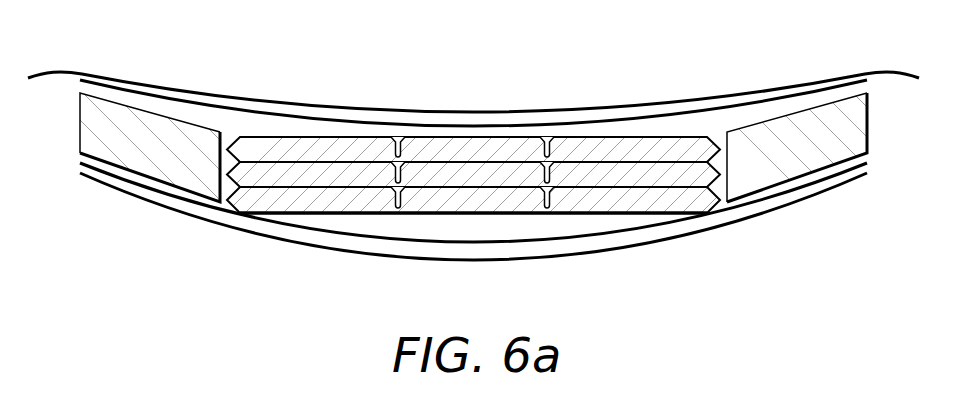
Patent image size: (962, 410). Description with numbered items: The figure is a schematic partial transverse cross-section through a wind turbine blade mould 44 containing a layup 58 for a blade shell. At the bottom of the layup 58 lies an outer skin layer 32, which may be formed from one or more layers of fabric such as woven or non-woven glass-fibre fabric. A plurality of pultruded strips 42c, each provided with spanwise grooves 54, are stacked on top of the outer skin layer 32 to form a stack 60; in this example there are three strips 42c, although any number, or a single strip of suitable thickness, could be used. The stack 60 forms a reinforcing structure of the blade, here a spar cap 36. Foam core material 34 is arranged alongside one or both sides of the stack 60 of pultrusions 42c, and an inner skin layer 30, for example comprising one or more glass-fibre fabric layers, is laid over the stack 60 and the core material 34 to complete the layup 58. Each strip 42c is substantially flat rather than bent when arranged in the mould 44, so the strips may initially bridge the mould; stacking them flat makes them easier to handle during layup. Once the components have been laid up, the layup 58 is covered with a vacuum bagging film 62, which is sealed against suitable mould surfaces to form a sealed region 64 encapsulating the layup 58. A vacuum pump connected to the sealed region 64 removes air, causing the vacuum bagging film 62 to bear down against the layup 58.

The inner skin layer 30 is at (310, 117).
The outer skin layer 32 is at (388, 246).
The foam core material 34 is at (142, 123).
The spar cap 36 is at (232, 118).
The pultruded strip 42c is at (663, 195).
The wind turbine blade mould 44 is at (577, 258).
The spanwise groove 54 is at (398, 136).
The layup 58 is at (870, 77).
The stack 60 is at (210, 187).
The vacuum bagging film 62 is at (873, 72).
The sealed region 64 is at (698, 102).